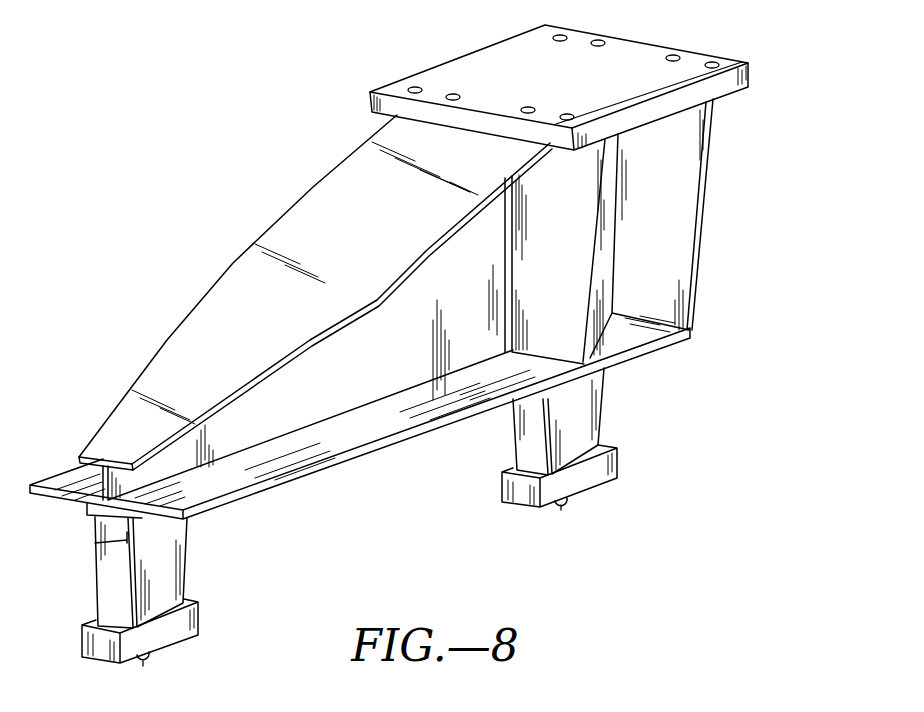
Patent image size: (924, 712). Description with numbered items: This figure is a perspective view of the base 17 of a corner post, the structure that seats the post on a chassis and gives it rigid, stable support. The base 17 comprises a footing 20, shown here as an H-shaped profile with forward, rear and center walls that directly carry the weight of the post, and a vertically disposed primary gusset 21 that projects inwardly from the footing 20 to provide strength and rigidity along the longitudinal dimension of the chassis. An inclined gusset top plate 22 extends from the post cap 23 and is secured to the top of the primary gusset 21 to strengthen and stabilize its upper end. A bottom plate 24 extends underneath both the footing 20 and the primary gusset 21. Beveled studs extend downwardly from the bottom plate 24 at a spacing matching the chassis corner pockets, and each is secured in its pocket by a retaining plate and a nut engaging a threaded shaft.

The base 17 is at (334, 101).
The footing 20 is at (557, 268).
The primary gusset 21 is at (270, 418).
The inclined gusset top plate 22 is at (313, 187).
The post cap 23 is at (750, 66).
The bottom plate 24 is at (421, 432).